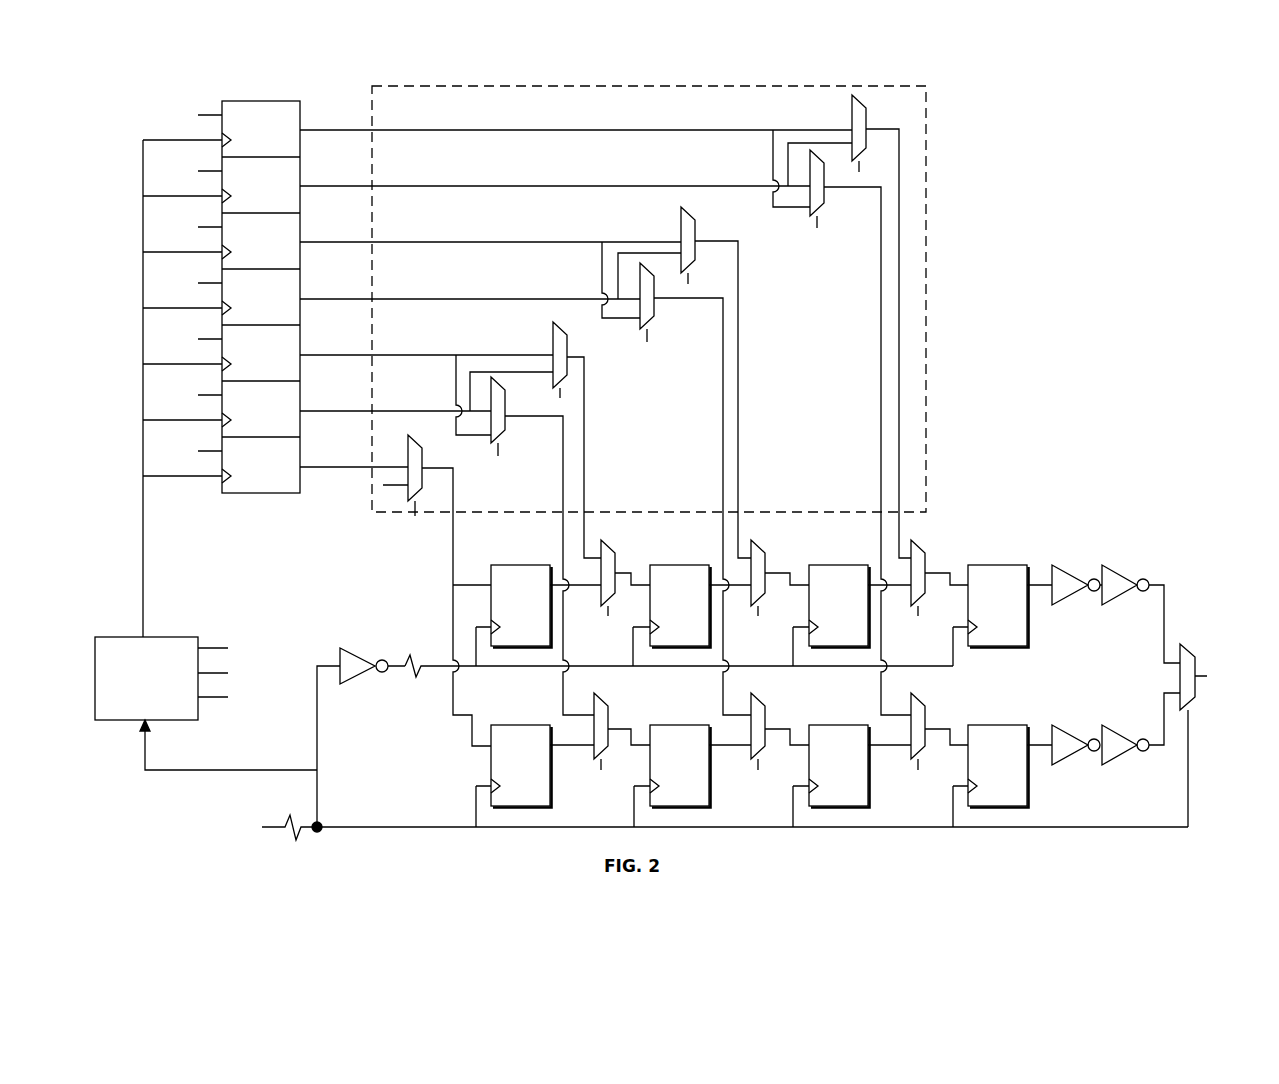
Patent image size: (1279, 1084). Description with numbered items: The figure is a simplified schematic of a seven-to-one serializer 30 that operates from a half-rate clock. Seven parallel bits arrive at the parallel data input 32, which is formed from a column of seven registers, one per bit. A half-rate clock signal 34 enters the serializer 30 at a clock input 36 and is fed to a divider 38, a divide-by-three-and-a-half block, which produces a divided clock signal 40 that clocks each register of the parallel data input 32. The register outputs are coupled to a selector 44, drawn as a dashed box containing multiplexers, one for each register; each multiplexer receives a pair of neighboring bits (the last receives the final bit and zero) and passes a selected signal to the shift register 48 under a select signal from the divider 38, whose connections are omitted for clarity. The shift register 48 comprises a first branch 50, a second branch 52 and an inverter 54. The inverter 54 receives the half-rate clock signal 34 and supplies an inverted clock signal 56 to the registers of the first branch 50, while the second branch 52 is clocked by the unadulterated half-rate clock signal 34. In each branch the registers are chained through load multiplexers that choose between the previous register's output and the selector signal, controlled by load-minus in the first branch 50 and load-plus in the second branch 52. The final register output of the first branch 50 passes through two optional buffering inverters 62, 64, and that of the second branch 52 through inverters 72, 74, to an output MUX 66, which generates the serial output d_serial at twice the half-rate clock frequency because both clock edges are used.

The 7:1 serializer 30 is at (1050, 205).
The parallel data input 32 is at (255, 80).
The half-rate clock signal 34 is at (288, 812).
The clock input 36 is at (322, 821).
The divider 38 is at (115, 720).
The divided clock signal 40 is at (143, 517).
The selector 44 is at (926, 255).
The shift register 48 is at (1170, 510).
The first branch 50 is at (1205, 606).
The second branch 52 is at (1224, 776).
The inverter 54 is at (357, 648).
The inverted clock signal 56 is at (411, 652).
The inverter 62 is at (1060, 565).
The inverter 64 is at (1108, 565).
The output MUX 66 is at (1195, 645).
The inverter 72 is at (1060, 725).
The inverter 74 is at (1108, 725).